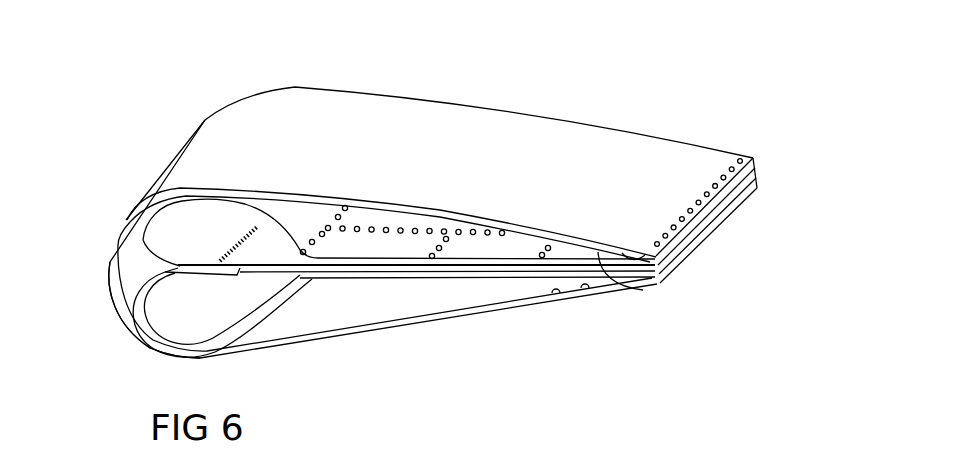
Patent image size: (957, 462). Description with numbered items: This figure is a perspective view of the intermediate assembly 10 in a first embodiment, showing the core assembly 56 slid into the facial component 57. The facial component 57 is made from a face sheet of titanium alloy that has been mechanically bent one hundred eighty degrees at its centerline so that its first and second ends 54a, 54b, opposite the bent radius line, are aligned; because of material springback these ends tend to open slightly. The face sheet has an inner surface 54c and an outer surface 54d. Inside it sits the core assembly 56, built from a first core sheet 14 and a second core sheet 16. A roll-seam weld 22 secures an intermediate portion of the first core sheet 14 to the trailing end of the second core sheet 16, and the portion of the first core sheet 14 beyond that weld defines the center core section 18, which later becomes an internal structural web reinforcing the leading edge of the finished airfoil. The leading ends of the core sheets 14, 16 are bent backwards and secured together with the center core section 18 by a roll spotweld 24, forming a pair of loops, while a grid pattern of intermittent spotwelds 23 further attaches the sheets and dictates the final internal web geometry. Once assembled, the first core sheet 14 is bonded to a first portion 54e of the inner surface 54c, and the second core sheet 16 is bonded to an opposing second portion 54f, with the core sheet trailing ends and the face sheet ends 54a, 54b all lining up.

The intermediate assembly 10 is at (120, 168).
The first core sheet 14 is at (304, 219).
The second core sheet 16 is at (324, 292).
The center core section 18 is at (277, 271).
The roll-seam weld 22 is at (215, 254).
The intermittent spotwelds 23 is at (531, 252).
The roll spotweld 24 is at (341, 214).
The first end of face sheet 54a is at (756, 158).
The second end of face sheet 54b is at (733, 203).
The inner surface of face sheet 54c is at (650, 260).
The outer surface of face sheet 54d is at (613, 147).
The first portion of face sheet inner surface 54e is at (643, 289).
The second portion of face sheet inner surface 54f is at (592, 288).
The core assembly 56 is at (124, 305).
The facial component 57 is at (150, 359).